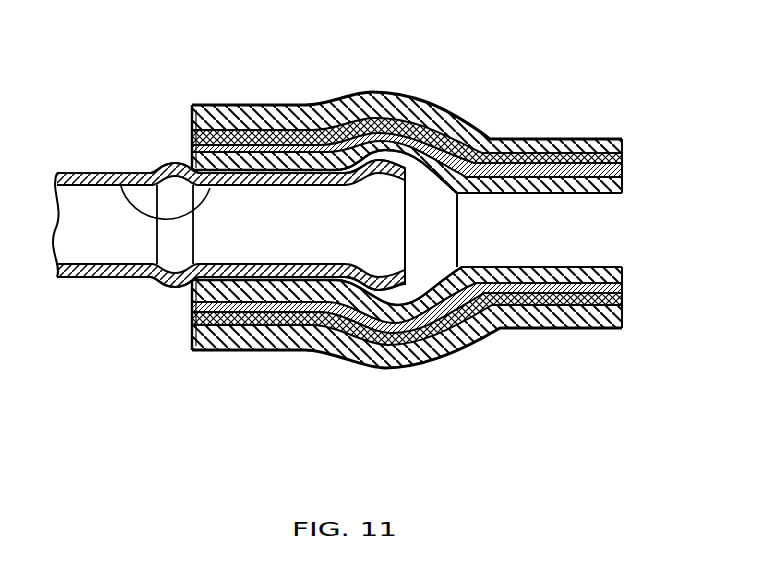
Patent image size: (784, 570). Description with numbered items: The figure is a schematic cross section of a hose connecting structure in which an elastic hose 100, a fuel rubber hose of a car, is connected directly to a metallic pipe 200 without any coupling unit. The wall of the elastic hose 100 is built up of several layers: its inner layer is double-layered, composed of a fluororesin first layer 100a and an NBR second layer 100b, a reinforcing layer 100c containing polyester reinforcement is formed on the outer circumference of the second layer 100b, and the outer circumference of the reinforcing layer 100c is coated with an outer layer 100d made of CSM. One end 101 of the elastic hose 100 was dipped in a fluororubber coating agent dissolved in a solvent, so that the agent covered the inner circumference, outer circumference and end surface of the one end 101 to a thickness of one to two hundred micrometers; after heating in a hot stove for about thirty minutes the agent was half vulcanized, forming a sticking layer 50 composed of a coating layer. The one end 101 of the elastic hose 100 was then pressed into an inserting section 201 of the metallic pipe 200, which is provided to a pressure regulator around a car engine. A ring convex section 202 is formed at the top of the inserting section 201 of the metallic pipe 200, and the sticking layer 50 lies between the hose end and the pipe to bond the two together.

The elastic hose 100 is at (471, 194).
The first layer 100a is at (620, 190).
The second layer 100b is at (623, 177).
The reinforcing layer 100c is at (623, 167).
The outer layer 100d is at (623, 148).
The one end 101 is at (240, 352).
The metallic pipe 200 is at (104, 280).
The inserting section 201 is at (113, 177).
The ring convex section 202 is at (392, 369).
The sticking layer 50 is at (430, 182).